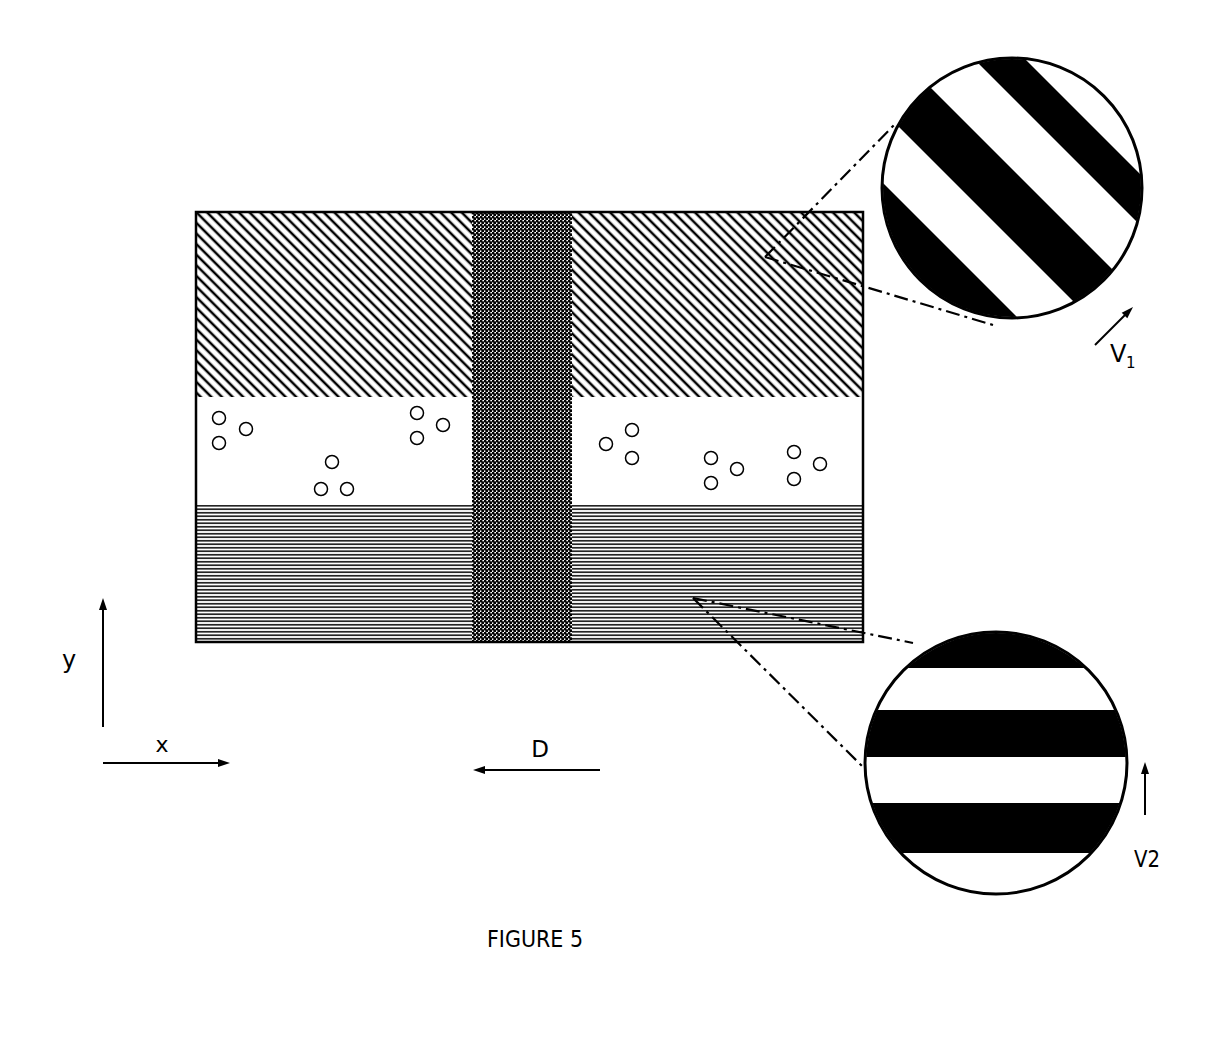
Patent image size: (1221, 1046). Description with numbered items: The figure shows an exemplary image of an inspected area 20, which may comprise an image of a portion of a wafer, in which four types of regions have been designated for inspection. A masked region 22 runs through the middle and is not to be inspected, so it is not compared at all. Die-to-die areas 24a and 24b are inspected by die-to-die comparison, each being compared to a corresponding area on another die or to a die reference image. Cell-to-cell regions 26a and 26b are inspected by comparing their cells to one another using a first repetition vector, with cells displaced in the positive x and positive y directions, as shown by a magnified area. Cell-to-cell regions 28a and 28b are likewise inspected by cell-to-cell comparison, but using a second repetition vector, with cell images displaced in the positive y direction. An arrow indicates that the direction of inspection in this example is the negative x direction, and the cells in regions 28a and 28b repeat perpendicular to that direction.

The inspected area 20 is at (196, 212).
The masked region 22 is at (507, 259).
The die-to-die area 24a is at (280, 435).
The die-to-die area 24b is at (688, 427).
The cell-to-cell region 26a is at (452, 259).
The cell-to-cell region 26b is at (590, 259).
The cell-to-cell region 28a is at (430, 554).
The cell-to-cell region 28b is at (590, 554).